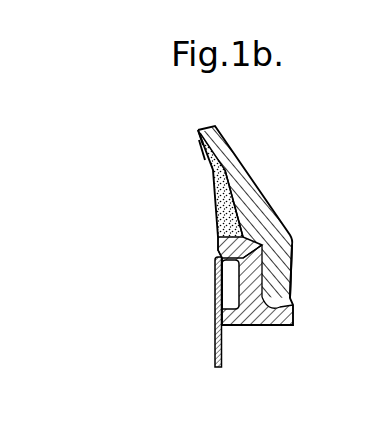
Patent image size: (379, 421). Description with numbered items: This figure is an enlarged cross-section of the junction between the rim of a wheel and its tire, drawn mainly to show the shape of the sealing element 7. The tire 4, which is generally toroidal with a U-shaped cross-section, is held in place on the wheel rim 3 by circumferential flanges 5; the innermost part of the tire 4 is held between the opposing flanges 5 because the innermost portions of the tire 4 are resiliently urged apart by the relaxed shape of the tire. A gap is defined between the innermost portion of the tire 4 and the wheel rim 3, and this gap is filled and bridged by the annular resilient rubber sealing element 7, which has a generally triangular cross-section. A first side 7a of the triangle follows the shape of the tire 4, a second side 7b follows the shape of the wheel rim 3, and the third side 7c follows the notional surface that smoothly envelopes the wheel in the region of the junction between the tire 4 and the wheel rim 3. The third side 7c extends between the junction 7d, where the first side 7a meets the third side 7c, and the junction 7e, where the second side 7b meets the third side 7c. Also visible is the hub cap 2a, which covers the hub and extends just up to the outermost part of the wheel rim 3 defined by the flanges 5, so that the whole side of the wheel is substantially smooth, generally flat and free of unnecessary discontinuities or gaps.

The hub cap 2a is at (215, 353).
The wheel rim 3 is at (265, 328).
The tire 4 is at (228, 162).
The circumferential flanges 5 is at (243, 280).
The sealing element 7 is at (220, 228).
The first side 7a is at (236, 193).
The second side 7b is at (243, 248).
The third side 7c is at (196, 157).
The junction 7d is at (199, 142).
The junction 7e is at (217, 238).